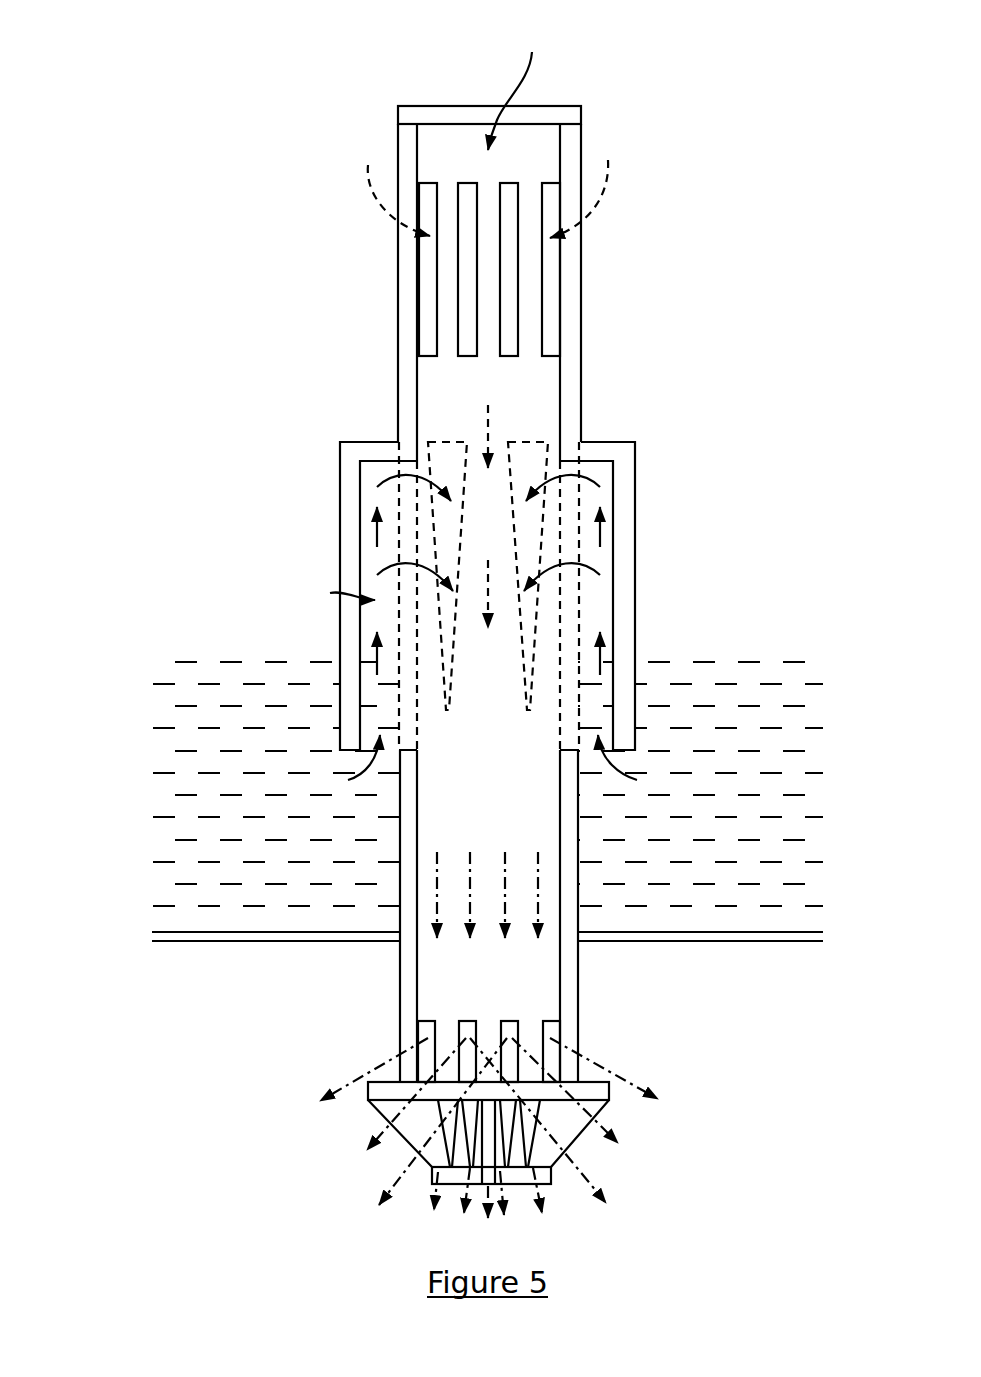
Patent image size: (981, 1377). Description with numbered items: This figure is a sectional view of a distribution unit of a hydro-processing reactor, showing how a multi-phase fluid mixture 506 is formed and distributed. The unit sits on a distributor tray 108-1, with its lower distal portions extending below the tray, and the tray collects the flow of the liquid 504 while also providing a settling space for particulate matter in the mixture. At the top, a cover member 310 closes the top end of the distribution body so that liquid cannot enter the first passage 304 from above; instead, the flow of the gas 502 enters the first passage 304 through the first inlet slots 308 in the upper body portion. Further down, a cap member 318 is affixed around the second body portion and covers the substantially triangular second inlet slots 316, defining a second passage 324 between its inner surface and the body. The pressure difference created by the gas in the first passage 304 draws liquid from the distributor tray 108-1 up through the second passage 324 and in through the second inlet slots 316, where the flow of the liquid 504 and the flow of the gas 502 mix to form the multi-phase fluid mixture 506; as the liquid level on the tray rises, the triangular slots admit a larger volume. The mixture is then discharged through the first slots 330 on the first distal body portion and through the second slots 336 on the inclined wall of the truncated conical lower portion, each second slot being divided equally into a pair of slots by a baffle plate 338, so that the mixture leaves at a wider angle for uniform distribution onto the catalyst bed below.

The cover member 310 is at (457, 116).
The first passage 304 is at (556, 44).
The first inlet slots 308 is at (460, 183).
The flow of the gas 502 is at (608, 187).
The second inlet slots 316 is at (447, 448).
The cap member 318 is at (622, 495).
The flow of the liquid 504 is at (597, 540).
The second passage 324 is at (297, 599).
The distributor tray 108-1 is at (173, 935).
The first slots 330 is at (459, 1021).
The multi-phase fluid mixture 506 is at (609, 1085).
The second slots 336 is at (443, 1130).
The baffle plate 338 is at (530, 1113).